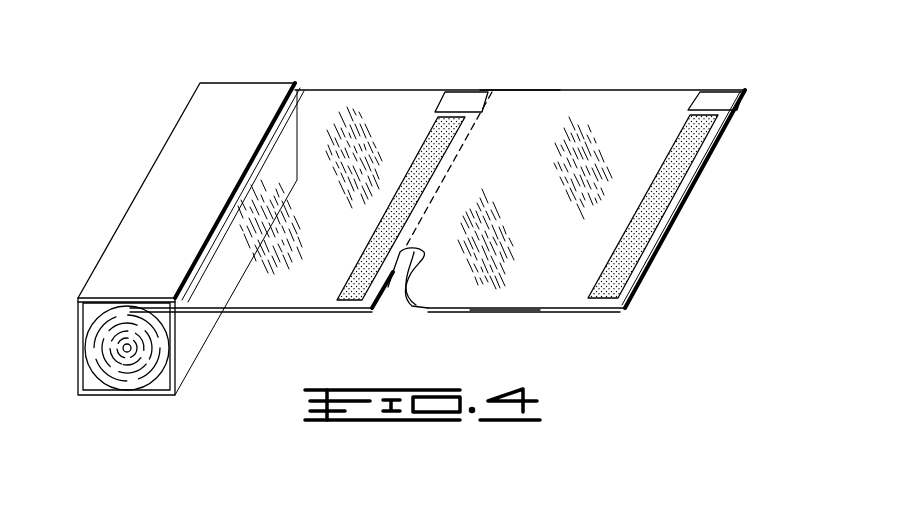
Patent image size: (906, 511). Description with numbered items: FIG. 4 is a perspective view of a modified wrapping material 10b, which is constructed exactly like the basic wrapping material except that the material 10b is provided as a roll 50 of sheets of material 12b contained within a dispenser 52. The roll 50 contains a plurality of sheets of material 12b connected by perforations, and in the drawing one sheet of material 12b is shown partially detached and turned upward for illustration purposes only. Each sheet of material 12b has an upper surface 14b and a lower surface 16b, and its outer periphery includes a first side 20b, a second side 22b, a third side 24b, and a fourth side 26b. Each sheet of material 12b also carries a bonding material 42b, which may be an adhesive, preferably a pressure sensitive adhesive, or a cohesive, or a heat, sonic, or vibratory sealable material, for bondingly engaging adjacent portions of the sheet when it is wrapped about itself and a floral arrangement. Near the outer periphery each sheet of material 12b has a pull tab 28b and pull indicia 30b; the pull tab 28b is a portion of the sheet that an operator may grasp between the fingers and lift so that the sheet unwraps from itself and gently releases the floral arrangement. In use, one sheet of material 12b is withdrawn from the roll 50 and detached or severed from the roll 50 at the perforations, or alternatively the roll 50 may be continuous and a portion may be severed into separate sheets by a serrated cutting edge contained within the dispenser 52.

The wrapping material 10b is at (302, 55).
The sheet of material 12b is at (401, 89).
The upper surface 14b is at (500, 96).
The lower surface 16b is at (397, 270).
The first side 20b is at (705, 165).
The second side 22b is at (408, 250).
The third side 24b is at (522, 90).
The fourth side 26b is at (505, 310).
The pull tab 28b is at (745, 90).
The pull indicia 30b is at (722, 91).
The bonding material 42b is at (647, 222).
The roll 50 is at (127, 365).
The dispenser 52 is at (167, 172).